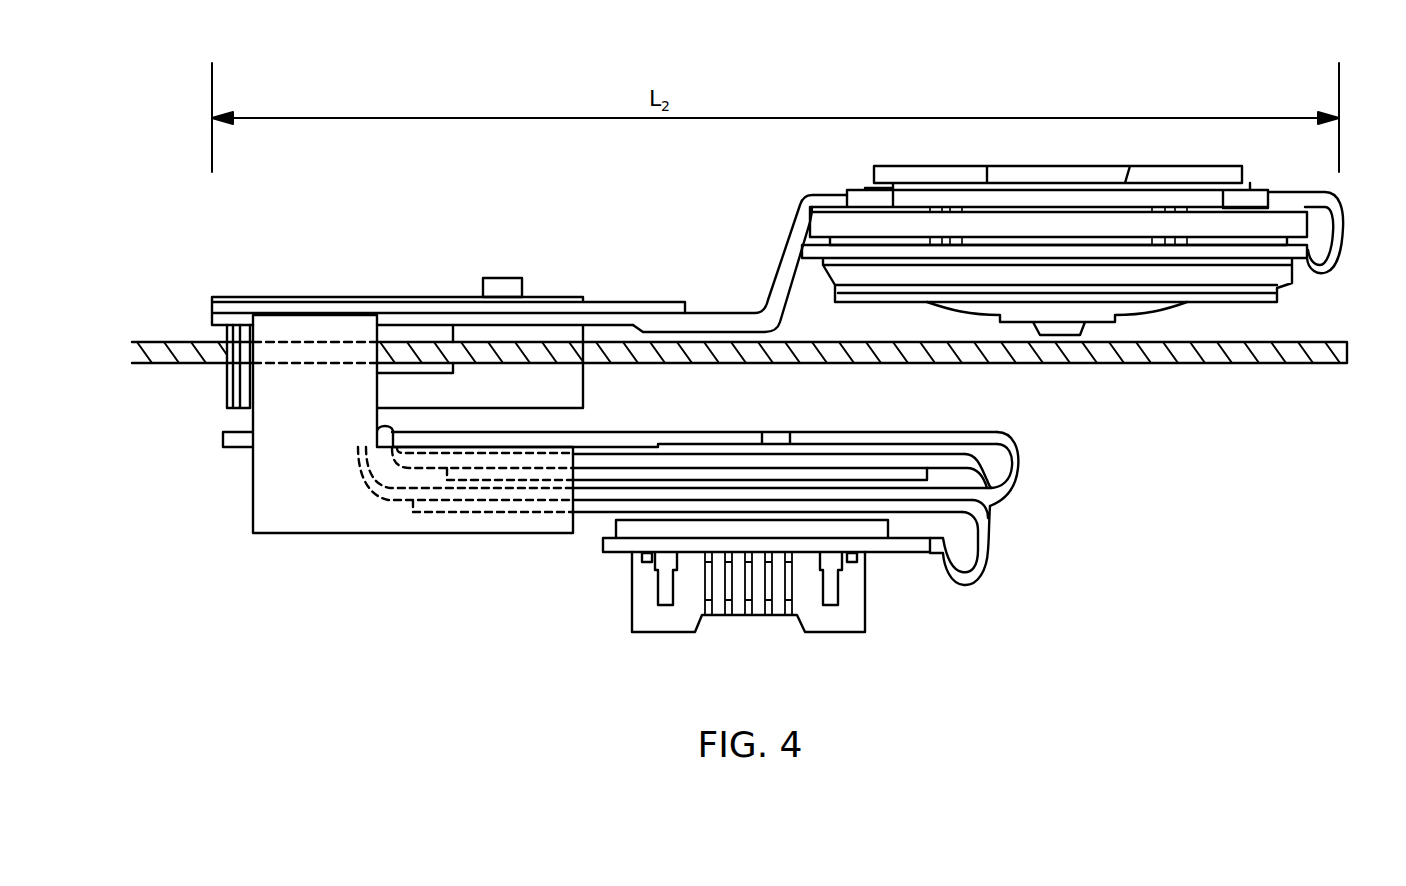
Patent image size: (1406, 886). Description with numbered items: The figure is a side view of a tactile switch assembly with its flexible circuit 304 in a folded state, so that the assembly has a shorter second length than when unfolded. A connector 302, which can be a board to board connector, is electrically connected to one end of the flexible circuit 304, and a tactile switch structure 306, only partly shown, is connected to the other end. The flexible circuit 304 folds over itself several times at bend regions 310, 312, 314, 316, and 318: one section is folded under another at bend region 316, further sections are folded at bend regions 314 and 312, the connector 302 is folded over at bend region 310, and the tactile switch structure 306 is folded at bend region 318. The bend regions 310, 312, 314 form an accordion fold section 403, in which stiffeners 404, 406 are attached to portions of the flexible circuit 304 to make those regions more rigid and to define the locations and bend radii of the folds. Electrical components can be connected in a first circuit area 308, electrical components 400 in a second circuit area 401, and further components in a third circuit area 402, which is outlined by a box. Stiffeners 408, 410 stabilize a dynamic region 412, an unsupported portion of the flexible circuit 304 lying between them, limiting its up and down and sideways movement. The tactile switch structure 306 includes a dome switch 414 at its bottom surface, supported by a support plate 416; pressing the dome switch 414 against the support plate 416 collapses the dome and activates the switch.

The connector 302 is at (758, 612).
The flexible circuit 304 is at (884, 436).
The tactile switch structure 306 is at (1240, 306).
The first circuit area 308 is at (575, 375).
The bend region 310 is at (982, 566).
The bend region 312 is at (380, 500).
The bend region 314 is at (1013, 463).
The bend region 316 is at (268, 372).
The bend region 318 is at (1345, 238).
The electrical components 400 is at (500, 279).
The second circuit area 401 is at (776, 369).
The third circuit area 402 is at (265, 497).
The accordion fold section 403 is at (814, 525).
The stiffener 404 is at (918, 498).
The stiffener 406 is at (795, 470).
The stiffener 408 is at (215, 304).
The stiffener 410 is at (838, 225).
The dynamic region 412 is at (750, 247).
The dome switch 414 is at (1033, 343).
The support plate 416 is at (1193, 357).